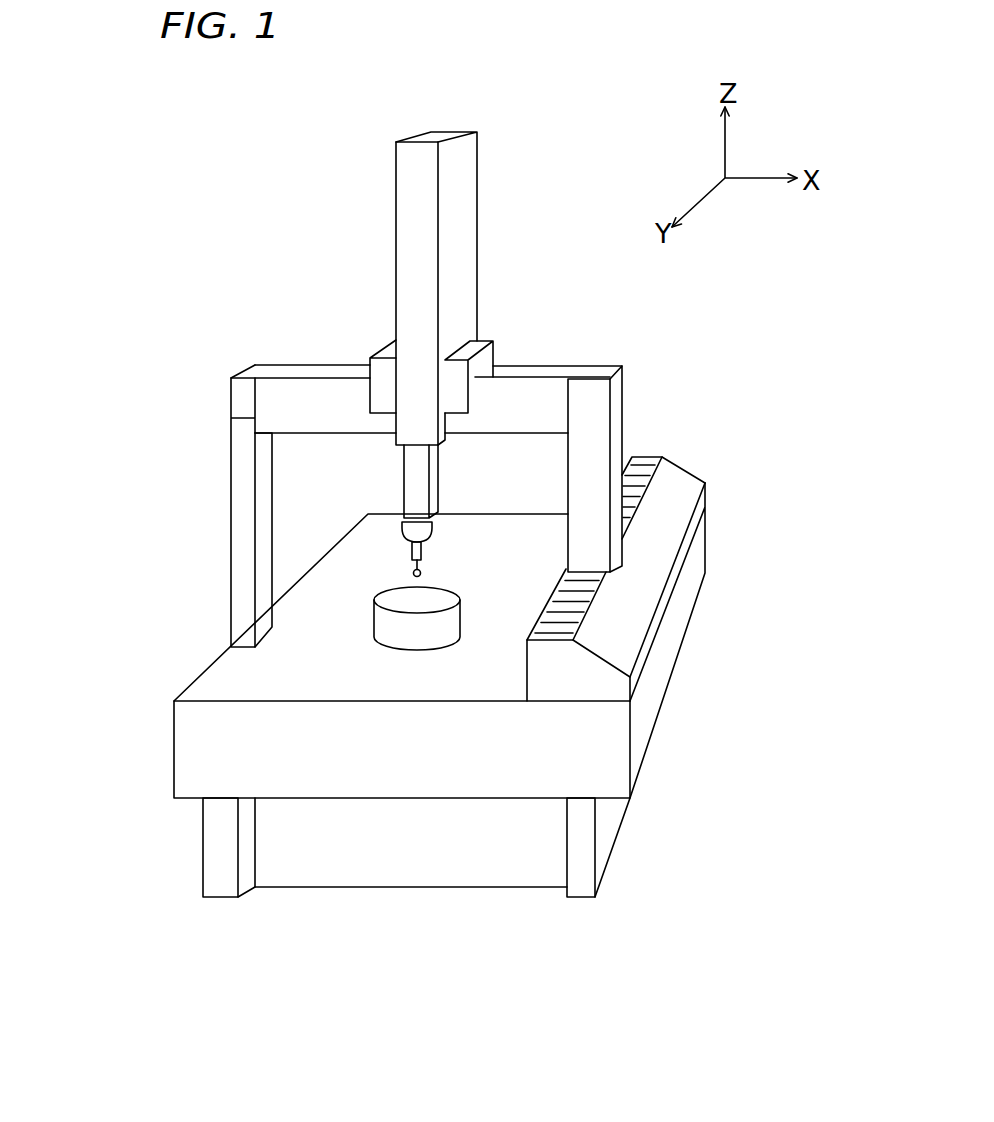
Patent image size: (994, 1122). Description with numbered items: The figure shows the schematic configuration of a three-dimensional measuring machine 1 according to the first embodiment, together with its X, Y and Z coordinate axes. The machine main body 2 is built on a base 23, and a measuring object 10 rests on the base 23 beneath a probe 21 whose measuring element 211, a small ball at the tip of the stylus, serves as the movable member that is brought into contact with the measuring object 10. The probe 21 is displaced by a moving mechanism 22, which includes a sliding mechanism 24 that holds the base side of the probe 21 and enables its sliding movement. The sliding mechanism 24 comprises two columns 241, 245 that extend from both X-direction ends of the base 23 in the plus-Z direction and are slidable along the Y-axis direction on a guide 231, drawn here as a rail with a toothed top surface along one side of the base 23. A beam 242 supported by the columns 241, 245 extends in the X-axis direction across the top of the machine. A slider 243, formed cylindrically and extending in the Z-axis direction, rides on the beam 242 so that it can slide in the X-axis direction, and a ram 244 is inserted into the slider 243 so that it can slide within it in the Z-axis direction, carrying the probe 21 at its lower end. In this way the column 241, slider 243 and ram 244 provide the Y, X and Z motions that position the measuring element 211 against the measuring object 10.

The three-dimensional measuring machine 1 is at (243, 263).
The coordinate measuring machine main body 2 is at (625, 343).
The measuring object 10 is at (364, 652).
The probe 21 is at (423, 532).
The measuring element 211 is at (422, 572).
The moving mechanism 22 is at (242, 327).
The base 23 is at (230, 683).
The guide 231 is at (622, 627).
The sliding mechanism 24 is at (397, 389).
The column 241 is at (242, 463).
The beam 242 is at (540, 395).
The slider 243 is at (460, 173).
The ram 244 is at (432, 485).
The column 245 is at (593, 412).